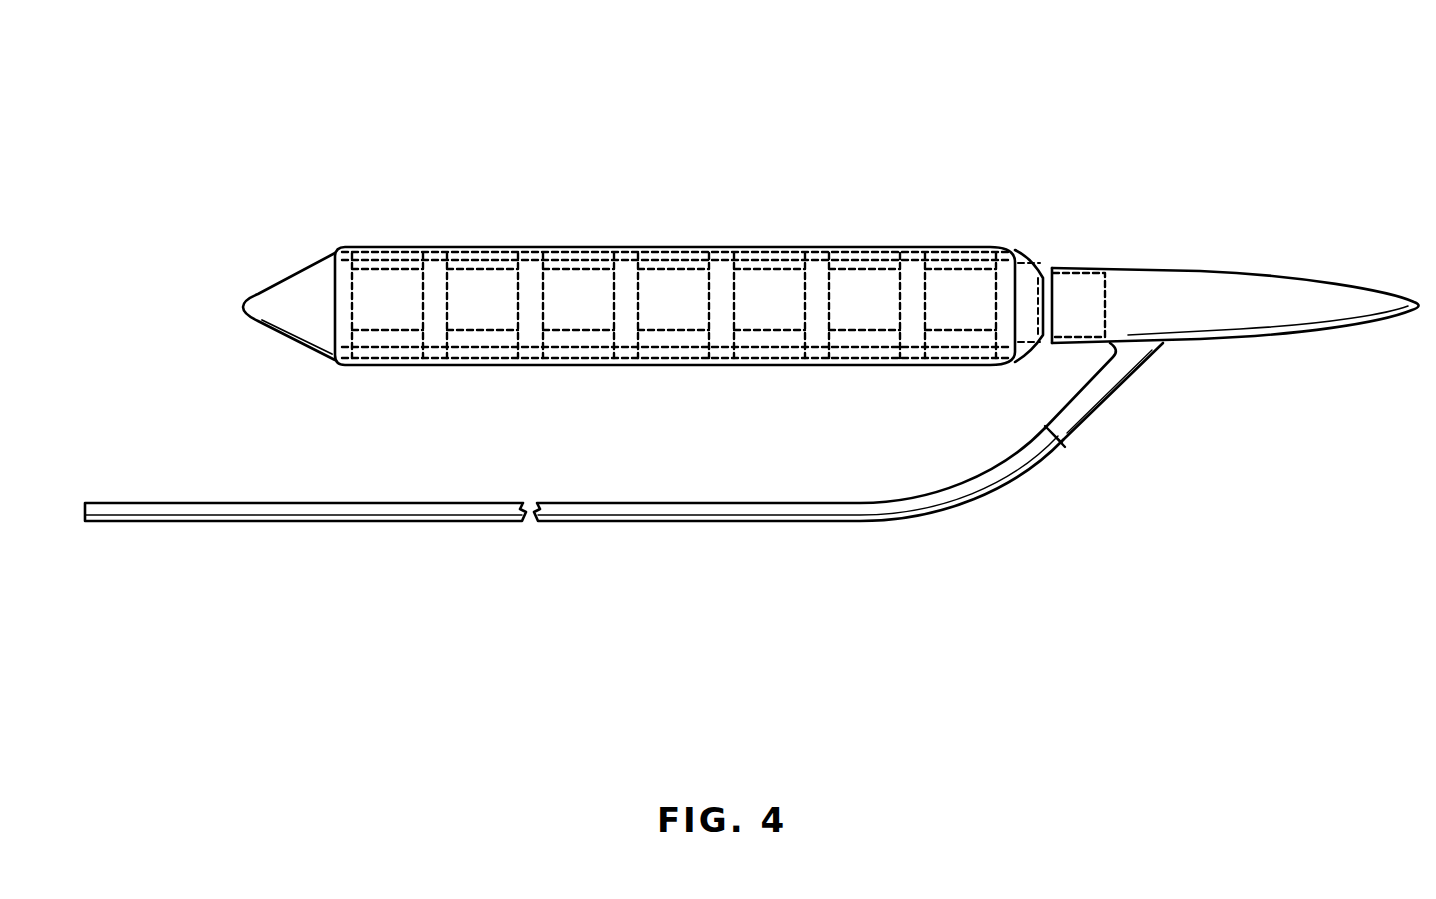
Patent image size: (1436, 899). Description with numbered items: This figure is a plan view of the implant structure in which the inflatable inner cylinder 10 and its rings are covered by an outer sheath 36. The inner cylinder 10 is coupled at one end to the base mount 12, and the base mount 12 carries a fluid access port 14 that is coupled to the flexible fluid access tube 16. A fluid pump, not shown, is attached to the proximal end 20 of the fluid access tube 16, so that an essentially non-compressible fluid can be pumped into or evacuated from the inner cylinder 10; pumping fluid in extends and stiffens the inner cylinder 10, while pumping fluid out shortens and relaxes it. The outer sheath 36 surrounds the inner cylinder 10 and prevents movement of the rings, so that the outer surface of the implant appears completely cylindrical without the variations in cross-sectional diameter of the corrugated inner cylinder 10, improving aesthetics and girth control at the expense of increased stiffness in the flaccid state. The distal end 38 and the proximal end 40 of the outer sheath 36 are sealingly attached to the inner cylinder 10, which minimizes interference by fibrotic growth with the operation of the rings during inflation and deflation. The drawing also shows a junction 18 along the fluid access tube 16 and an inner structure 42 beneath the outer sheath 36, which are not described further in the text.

The inner cylinder 10 is at (273, 107).
The base mount 12 is at (1282, 295).
The fluid access port 14 is at (1117, 373).
The fluid access tube 16 is at (932, 507).
The tube joint 18 is at (1058, 443).
The proximal end 20 is at (85, 515).
The outer sheath 36 is at (772, 247).
The distal end 38 is at (398, 252).
The proximal end 40 is at (1018, 260).
The cell envelope wrap 42 is at (630, 247).